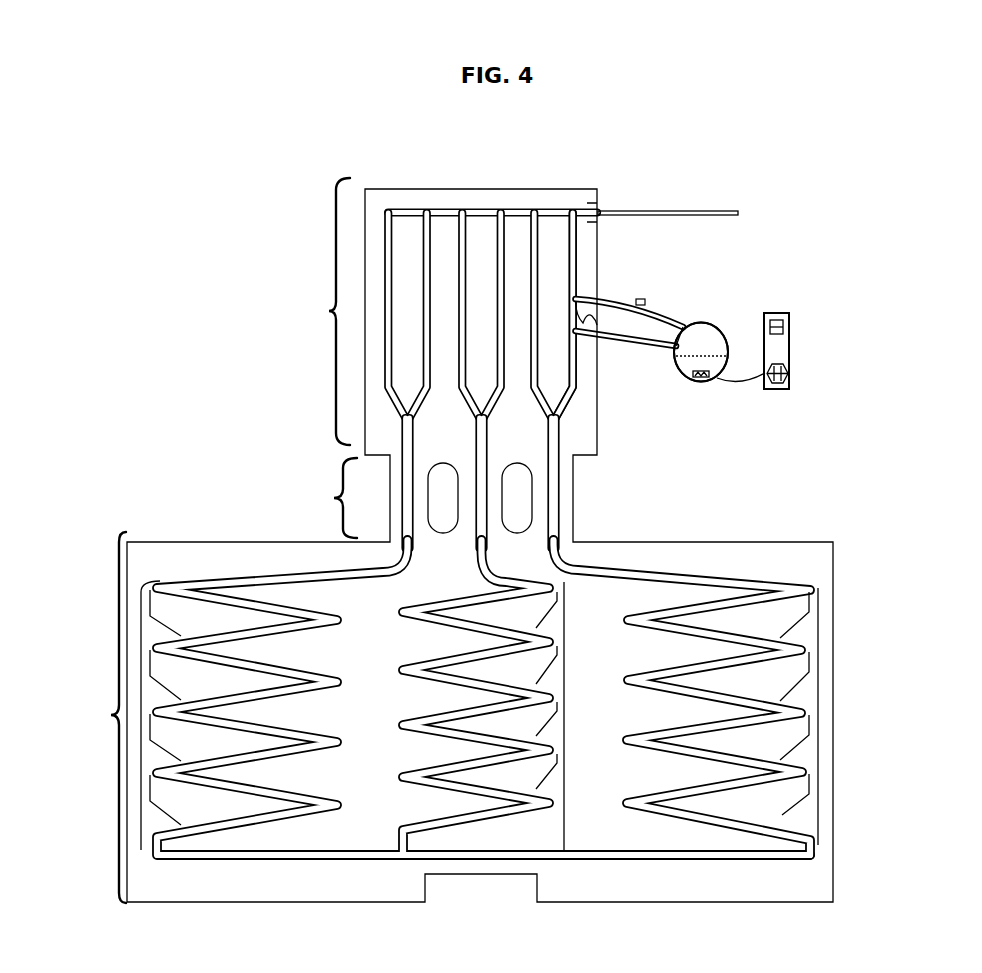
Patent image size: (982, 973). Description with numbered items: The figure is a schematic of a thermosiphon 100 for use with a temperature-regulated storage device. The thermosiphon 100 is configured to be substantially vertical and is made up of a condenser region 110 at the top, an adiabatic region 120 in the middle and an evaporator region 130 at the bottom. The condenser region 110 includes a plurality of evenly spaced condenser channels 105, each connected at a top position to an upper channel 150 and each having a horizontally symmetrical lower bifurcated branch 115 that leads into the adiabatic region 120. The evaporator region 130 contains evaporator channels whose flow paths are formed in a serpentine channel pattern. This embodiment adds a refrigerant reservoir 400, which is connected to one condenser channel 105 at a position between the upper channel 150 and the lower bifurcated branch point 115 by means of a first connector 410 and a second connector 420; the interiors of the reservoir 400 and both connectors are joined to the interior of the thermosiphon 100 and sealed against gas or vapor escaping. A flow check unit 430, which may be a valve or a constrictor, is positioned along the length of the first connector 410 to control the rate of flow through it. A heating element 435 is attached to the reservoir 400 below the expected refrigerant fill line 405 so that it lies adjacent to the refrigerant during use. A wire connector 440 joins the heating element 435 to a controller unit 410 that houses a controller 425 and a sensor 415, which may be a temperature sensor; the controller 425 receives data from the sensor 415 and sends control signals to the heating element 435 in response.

The thermosiphon 100 is at (214, 247).
The condenser channel 105 is at (581, 235).
The condenser region 110 is at (425, 311).
The bifurcated branch 115 is at (573, 433).
The adiabatic region 120 is at (410, 498).
The evaporator region 130 is at (444, 717).
The upper channel 150 is at (514, 200).
The refrigerant reservoir 400 is at (714, 318).
The refrigerant fill line 405 is at (669, 358).
The first connector 410 is at (670, 307).
The sensor 415 is at (777, 393).
The second connector 420 is at (622, 344).
The controller 425 is at (757, 332).
The flow check unit 430 is at (640, 300).
The heating element 435 is at (693, 385).
The wire connector 440 is at (737, 387).